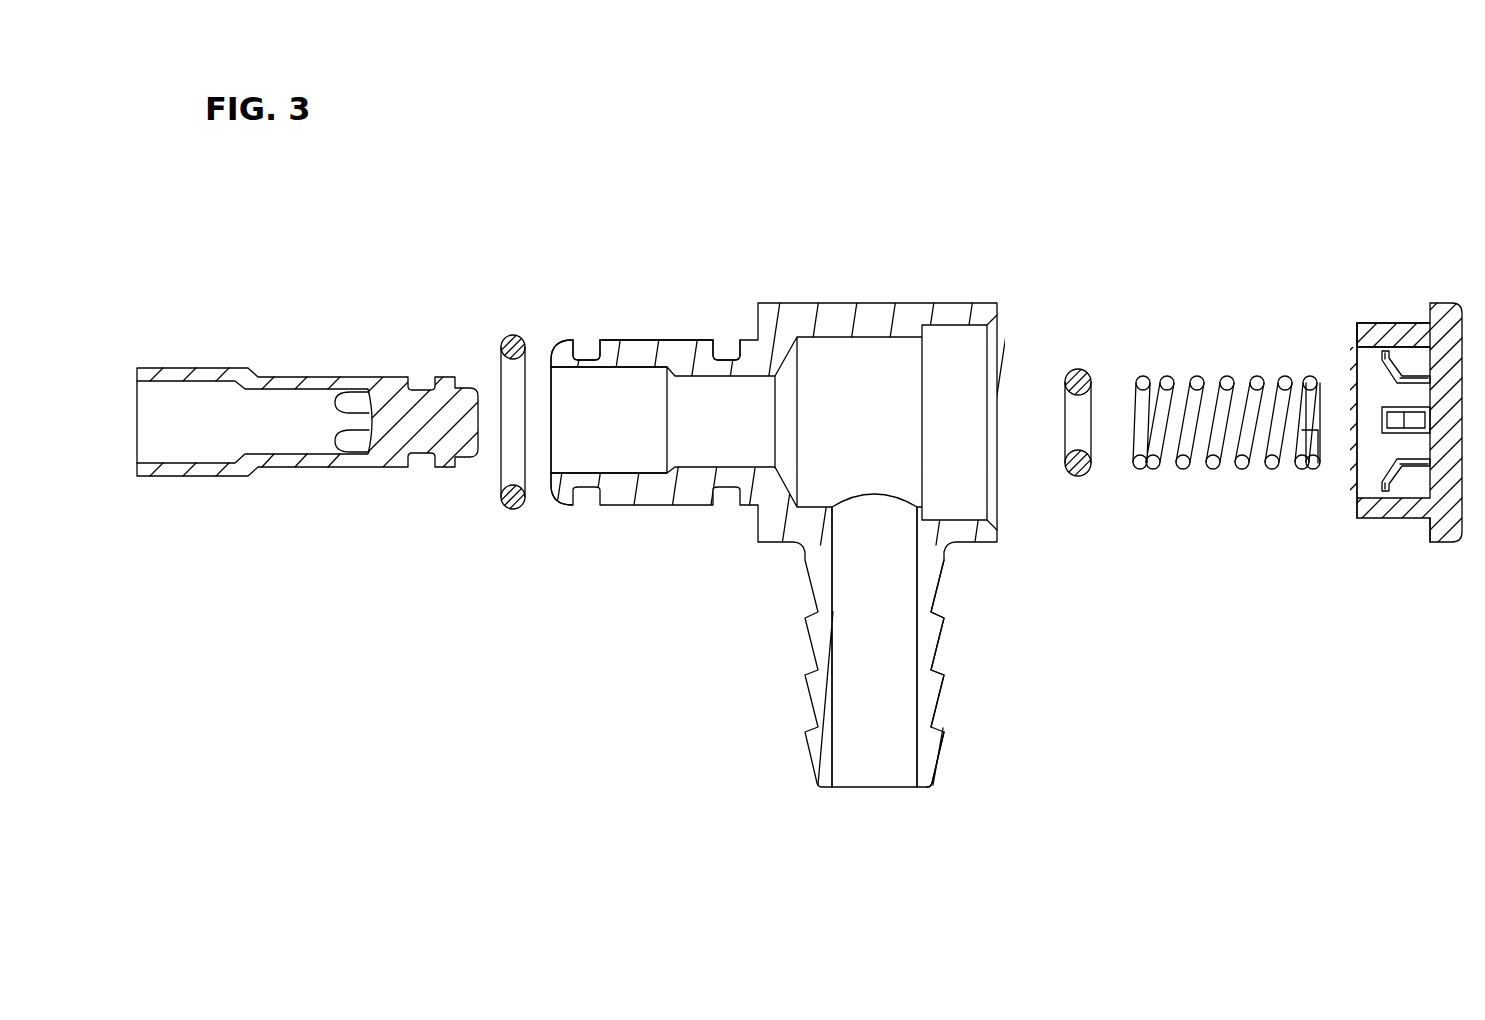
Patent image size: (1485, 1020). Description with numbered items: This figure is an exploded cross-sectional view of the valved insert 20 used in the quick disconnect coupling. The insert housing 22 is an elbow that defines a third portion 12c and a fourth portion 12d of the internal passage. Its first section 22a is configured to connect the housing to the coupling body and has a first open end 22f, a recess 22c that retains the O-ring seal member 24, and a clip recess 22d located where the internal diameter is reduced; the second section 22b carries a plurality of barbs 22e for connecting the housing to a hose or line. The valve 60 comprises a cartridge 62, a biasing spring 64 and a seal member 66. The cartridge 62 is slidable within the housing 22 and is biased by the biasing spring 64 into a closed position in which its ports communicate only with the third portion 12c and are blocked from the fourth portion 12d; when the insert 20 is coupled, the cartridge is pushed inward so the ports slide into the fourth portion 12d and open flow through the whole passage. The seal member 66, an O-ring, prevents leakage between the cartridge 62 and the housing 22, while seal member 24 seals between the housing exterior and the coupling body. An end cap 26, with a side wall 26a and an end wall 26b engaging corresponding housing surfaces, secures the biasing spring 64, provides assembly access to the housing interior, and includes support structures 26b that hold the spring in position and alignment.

The valved insert 20 is at (573, 210).
The insert housing 22 is at (818, 287).
The first section 22a is at (683, 348).
The second section 22b is at (920, 667).
The recess 22c is at (587, 358).
The clip recess 22d is at (728, 356).
The barbs 22e is at (940, 728).
The first open end 22f is at (550, 478).
The third portion of the internal passage 12c is at (640, 432).
The fourth portion of the internal passage 12d is at (892, 729).
The seal member 24 is at (508, 340).
The end cap 26 is at (1440, 300).
The side wall 26a is at (1367, 325).
The end wall 26b is at (1390, 372).
The valve 60 is at (160, 350).
The cartridge 62 is at (326, 381).
The biasing spring 64 is at (1225, 382).
The seal member 66 is at (1068, 372).